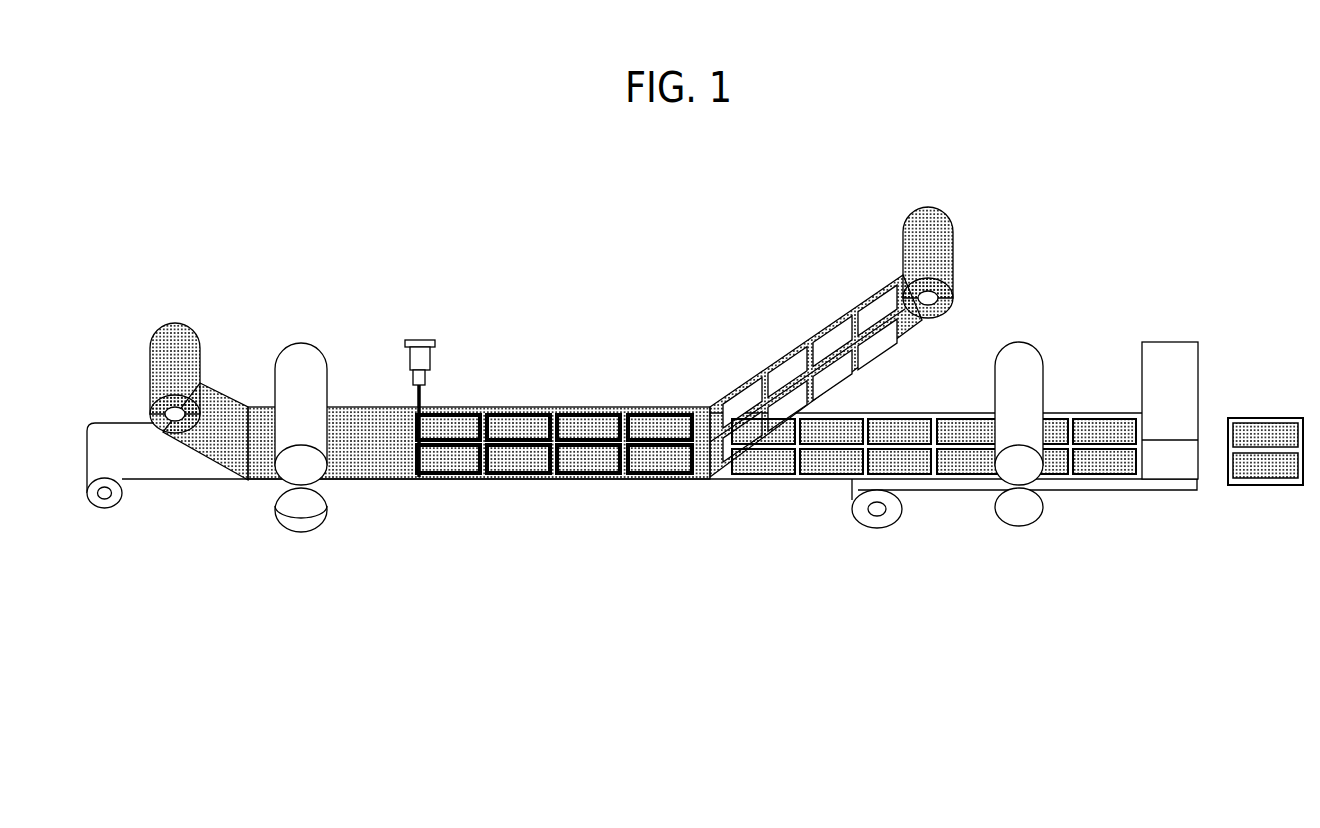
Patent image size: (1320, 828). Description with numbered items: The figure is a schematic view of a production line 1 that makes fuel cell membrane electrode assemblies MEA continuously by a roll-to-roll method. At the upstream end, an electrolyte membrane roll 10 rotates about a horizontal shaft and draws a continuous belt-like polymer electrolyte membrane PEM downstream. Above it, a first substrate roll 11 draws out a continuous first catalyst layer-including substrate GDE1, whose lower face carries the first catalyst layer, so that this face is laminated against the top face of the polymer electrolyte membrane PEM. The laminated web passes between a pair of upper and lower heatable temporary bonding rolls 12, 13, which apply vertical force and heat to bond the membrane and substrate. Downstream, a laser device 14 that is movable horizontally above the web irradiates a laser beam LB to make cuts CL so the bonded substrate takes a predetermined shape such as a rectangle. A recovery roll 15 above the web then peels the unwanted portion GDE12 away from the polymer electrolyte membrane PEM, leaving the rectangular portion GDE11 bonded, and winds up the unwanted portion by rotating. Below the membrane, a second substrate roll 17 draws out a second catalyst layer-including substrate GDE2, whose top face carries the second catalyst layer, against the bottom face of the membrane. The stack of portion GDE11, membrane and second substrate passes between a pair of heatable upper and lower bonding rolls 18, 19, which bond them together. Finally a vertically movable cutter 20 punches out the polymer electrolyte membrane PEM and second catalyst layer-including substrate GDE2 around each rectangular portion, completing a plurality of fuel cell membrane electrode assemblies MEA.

The production line 1 is at (685, 354).
The electrolyte membrane roll 10 is at (105, 496).
The first substrate roll 11 is at (165, 385).
The upper temporary bonding roll 12 is at (302, 355).
The lower temporary bonding roll 13 is at (302, 518).
The laser device 14 is at (422, 360).
The recovery roll 15 is at (930, 297).
The second substrate roll 17 is at (878, 512).
The upper bonding roll 18 is at (1028, 357).
The lower bonding roll 19 is at (1024, 515).
The cutter 20 is at (1183, 350).
The first catalyst layer-including substrate GDE1 is at (176, 330).
The portion of a predetermined shape GDE11 is at (597, 425).
The unwanted portion GDE12 is at (752, 377).
The second catalyst layer-including substrate GDE2 is at (948, 490).
The polymer electrolyte membrane PEM is at (165, 462).
The laser beam LB is at (424, 394).
The cuts CL is at (512, 471).
The fuel cell membrane electrode assembly MEA is at (1272, 424).